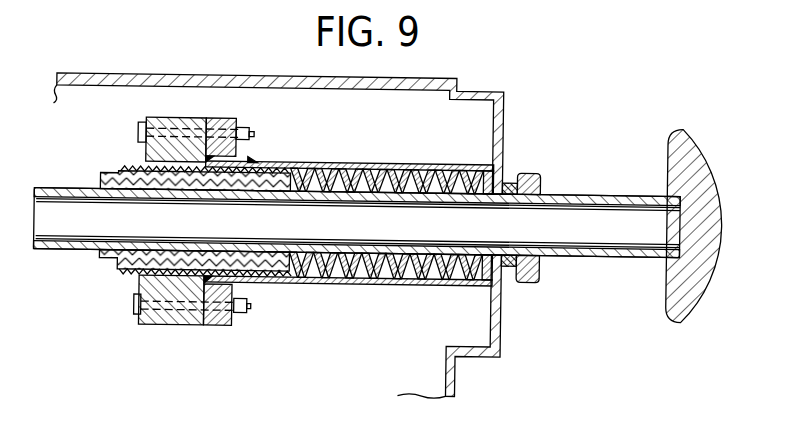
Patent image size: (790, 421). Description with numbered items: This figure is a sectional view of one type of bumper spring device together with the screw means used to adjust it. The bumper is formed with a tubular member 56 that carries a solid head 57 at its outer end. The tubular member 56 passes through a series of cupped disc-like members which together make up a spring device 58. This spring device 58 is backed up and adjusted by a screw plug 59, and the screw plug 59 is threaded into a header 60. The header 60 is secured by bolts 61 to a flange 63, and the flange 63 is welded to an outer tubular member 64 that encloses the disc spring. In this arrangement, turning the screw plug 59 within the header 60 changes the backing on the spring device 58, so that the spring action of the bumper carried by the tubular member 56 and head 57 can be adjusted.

The tubular member 56 is at (577, 212).
The solid head 57 is at (672, 271).
The spring device 58 is at (392, 167).
The screw plug 59 is at (128, 276).
The header 60 is at (143, 161).
The bolts 61 is at (250, 131).
The flange 63 is at (222, 329).
The tubular member 64 is at (395, 285).